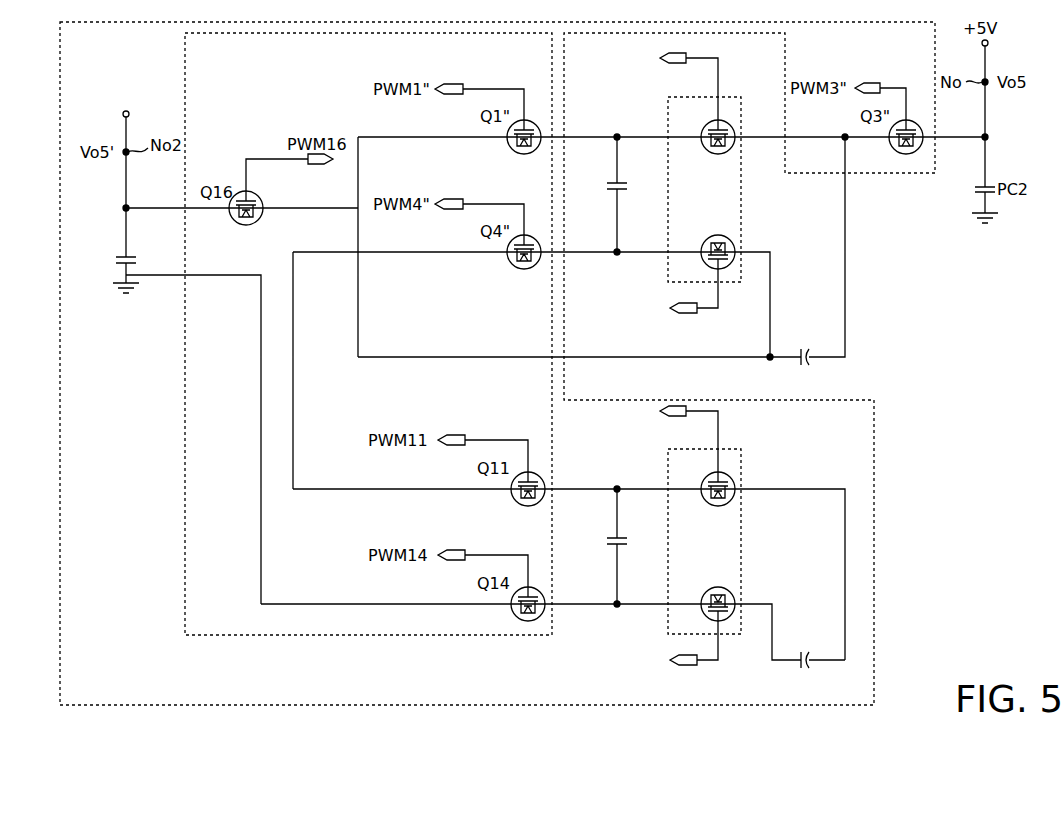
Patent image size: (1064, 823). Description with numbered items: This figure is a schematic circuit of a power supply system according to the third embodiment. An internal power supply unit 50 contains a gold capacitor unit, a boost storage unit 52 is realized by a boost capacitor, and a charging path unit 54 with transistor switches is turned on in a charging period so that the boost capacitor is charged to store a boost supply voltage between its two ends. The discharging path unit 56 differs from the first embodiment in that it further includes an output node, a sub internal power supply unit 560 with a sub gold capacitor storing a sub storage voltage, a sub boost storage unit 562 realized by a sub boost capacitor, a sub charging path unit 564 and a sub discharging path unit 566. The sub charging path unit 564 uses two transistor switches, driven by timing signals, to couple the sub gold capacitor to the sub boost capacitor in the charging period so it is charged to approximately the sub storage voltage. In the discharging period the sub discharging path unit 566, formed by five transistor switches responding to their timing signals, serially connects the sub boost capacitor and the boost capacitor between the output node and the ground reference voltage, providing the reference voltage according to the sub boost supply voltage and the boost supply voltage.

The internal power supply unit 50 is at (833, 328).
The boost storage unit 52 is at (606, 174).
The charging path unit 54 is at (733, 97).
The discharging path unit 56 is at (60, 365).
The sub internal power supply unit 560 is at (833, 630).
The sub boost storage unit 562 is at (606, 528).
The sub charging path unit 564 is at (733, 449).
The sub discharging path unit 566 is at (185, 365).